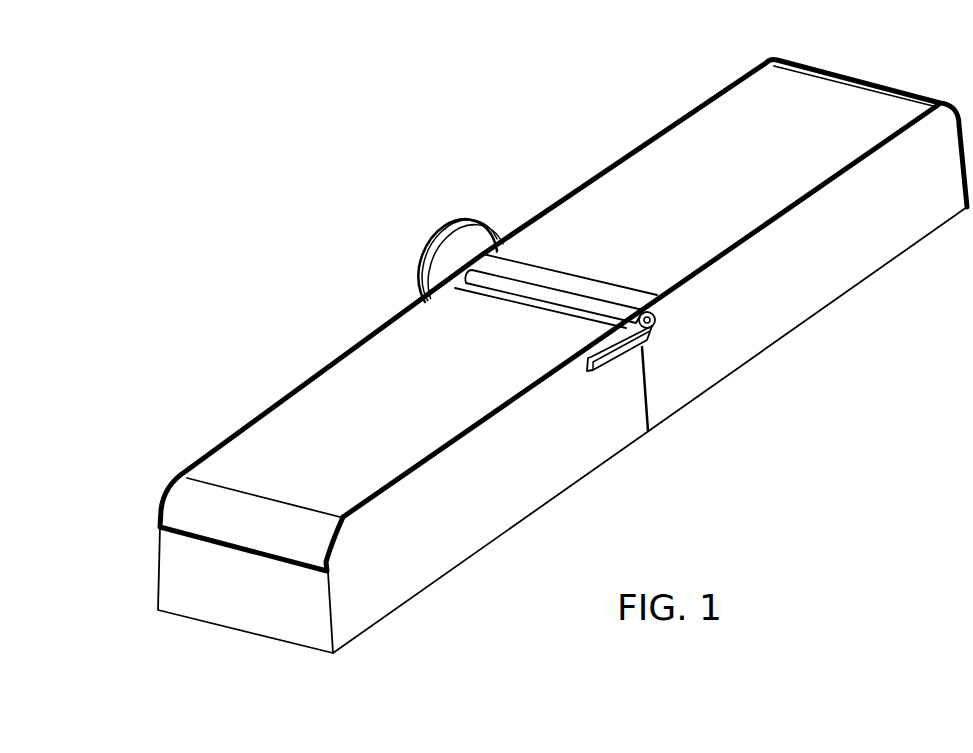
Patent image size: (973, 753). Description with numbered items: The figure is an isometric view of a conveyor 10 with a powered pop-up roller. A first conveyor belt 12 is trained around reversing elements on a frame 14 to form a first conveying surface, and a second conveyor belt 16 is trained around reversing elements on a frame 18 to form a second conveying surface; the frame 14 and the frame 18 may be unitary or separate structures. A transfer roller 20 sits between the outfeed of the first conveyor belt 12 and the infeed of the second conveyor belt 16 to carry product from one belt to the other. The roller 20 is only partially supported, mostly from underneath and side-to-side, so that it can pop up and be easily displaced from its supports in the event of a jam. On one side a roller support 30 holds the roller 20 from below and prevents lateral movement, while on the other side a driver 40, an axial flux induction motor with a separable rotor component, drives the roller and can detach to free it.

The conveyor 10 is at (508, 145).
The first conveyor belt 12 is at (312, 423).
The frame 14 is at (428, 563).
The second conveyor belt 16 is at (678, 162).
The frame 18 is at (820, 292).
The transfer roller 20 is at (657, 317).
The roller support 30 is at (604, 372).
The driver 40 is at (432, 240).